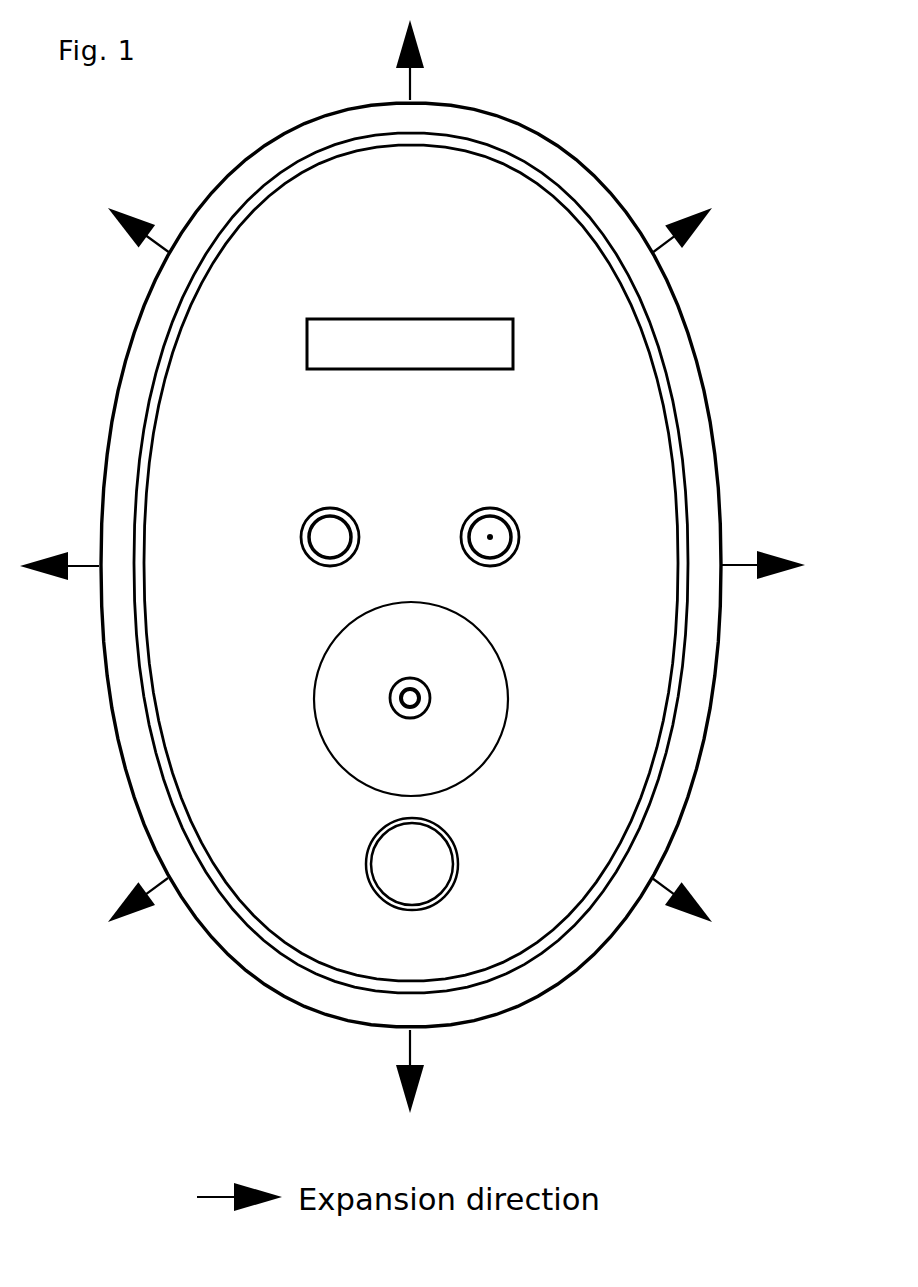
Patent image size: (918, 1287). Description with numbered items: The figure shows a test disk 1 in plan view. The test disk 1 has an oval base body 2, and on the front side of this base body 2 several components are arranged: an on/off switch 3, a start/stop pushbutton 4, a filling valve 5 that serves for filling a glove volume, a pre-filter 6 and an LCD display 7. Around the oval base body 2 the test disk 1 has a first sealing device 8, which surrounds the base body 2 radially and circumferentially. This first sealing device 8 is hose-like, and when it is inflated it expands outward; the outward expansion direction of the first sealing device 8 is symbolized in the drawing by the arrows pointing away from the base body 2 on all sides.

The test disk 1 is at (488, 122).
The base body 2 is at (300, 166).
The on/off switch 3 is at (498, 529).
The start/stop pushbutton 4 is at (338, 529).
The filling valve 5 is at (411, 699).
The pre-filter 6 is at (412, 864).
The LCD display 7 is at (410, 344).
The first sealing device 8 is at (598, 178).